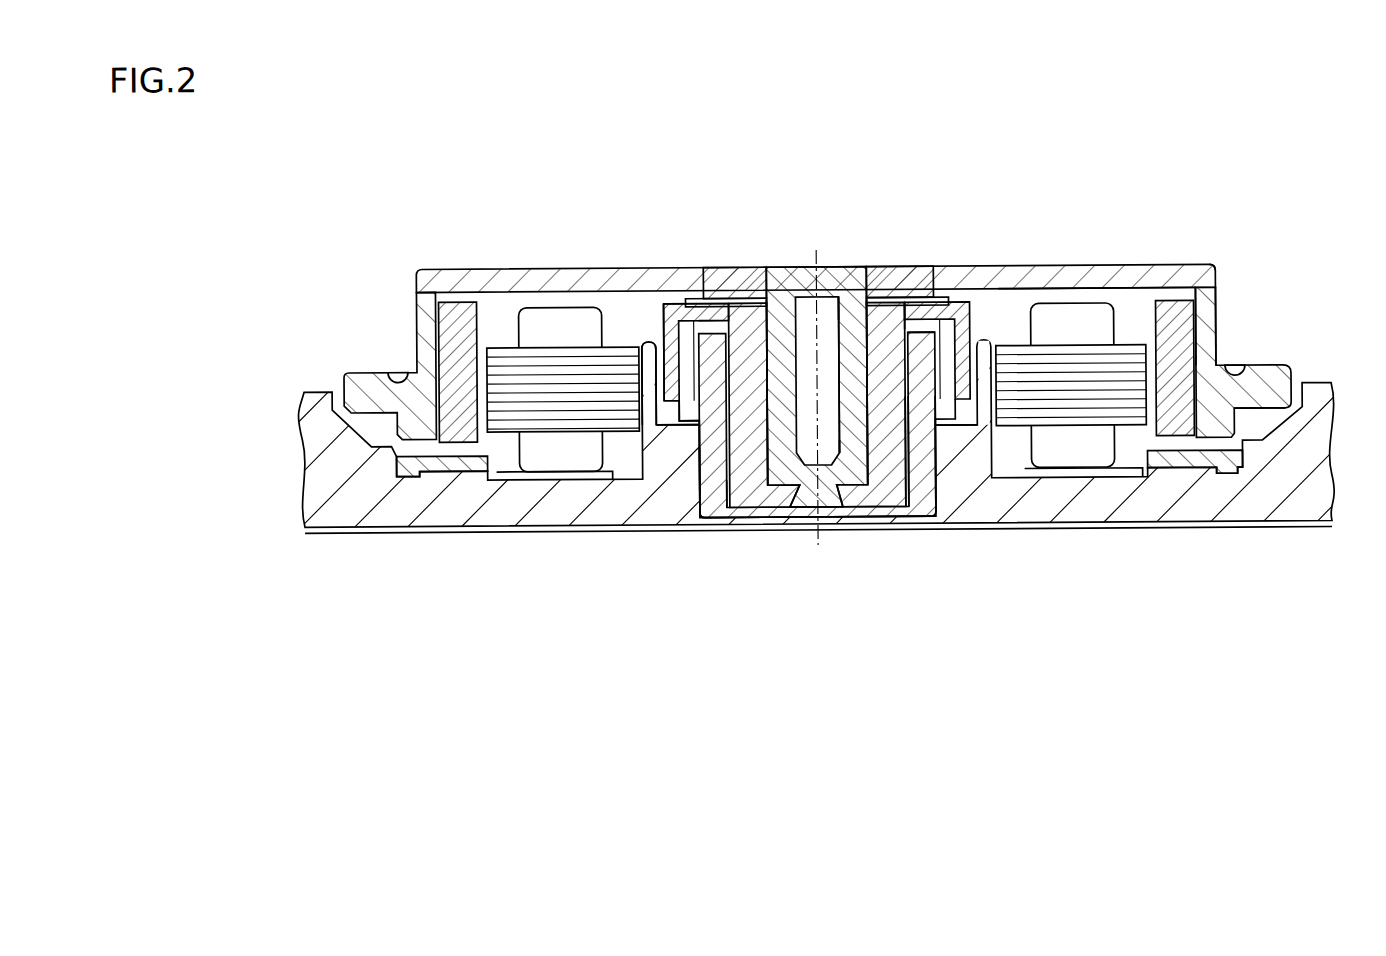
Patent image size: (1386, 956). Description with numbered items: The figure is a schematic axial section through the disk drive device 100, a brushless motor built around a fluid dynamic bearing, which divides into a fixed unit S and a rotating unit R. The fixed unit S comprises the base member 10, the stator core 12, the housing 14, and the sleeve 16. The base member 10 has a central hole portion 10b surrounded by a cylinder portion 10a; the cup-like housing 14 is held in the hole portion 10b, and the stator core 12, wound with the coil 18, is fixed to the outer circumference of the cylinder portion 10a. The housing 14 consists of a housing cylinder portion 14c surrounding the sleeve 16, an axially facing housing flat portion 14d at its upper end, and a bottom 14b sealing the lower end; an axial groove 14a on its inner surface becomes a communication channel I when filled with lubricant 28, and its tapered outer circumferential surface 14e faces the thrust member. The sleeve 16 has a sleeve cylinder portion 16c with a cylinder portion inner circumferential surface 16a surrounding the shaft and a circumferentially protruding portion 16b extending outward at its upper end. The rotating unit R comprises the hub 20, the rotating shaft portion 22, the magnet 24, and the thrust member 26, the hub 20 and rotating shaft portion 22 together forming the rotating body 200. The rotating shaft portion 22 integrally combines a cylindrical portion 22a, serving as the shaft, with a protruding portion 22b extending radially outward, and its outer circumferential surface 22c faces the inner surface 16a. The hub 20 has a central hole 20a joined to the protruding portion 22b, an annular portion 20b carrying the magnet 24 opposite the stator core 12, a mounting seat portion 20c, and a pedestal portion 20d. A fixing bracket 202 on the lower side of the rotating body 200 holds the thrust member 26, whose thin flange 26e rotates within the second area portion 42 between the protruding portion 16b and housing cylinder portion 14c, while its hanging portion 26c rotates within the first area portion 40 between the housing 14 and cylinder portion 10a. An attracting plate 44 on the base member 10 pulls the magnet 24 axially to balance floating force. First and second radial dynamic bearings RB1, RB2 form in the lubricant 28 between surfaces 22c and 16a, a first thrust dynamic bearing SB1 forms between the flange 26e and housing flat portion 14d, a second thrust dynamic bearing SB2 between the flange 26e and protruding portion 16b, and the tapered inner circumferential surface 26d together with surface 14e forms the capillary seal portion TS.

The disk drive device 100 is at (817, 729).
The rotating body 200 is at (1098, 272).
The fixing bracket 202 is at (1022, 310).
The base member 10 is at (365, 522).
The cylinder portion 10a is at (648, 347).
The hole portion 10b is at (697, 522).
The stator core 12 is at (505, 359).
The housing 14 is at (706, 472).
The groove 14a is at (917, 484).
The bottom 14b is at (880, 499).
The housing cylinder portion 14c is at (705, 519).
The housing flat portion 14d is at (937, 474).
The outer circumferential surface 14e is at (700, 513).
The sleeve 16 is at (745, 443).
The cylinder portion inner circumferential surface 16a is at (787, 508).
The circumferentially protruding portion 16b is at (745, 308).
The sleeve cylinder portion 16c is at (896, 494).
The coil 18 is at (540, 463).
The hub 20 is at (1133, 282).
The central hole 20a is at (935, 289).
The annular portion 20b is at (1210, 328).
The mounting seat portion 20c is at (1263, 384).
The pedestal portion 20d is at (1177, 306).
The rotating shaft portion 22 is at (806, 303).
The cylindrical portion 22a is at (822, 313).
The protruding portion 22b is at (878, 319).
The outer circumferential surface 22c is at (762, 303).
The magnet 24 is at (455, 312).
The thrust member 26 is at (962, 434).
The hanging portion 26c is at (683, 432).
The inner circumferential surface 26d is at (668, 321).
The flange 26e is at (692, 323).
The lubricant 28 is at (965, 306).
The first area portion 40 is at (690, 472).
The second area portion 42 is at (720, 305).
The attracting plate 44 is at (478, 472).
The rotating unit R is at (520, 286).
The fixed unit S is at (428, 530).
The communication channel I is at (712, 538).
The first radial dynamic bearing RB1 is at (855, 488).
The second radial dynamic bearing RB2 is at (848, 308).
The first thrust dynamic bearing SB1 is at (700, 503).
The second thrust dynamic bearing SB2 is at (905, 304).
The capillary seal portion TS is at (947, 459).